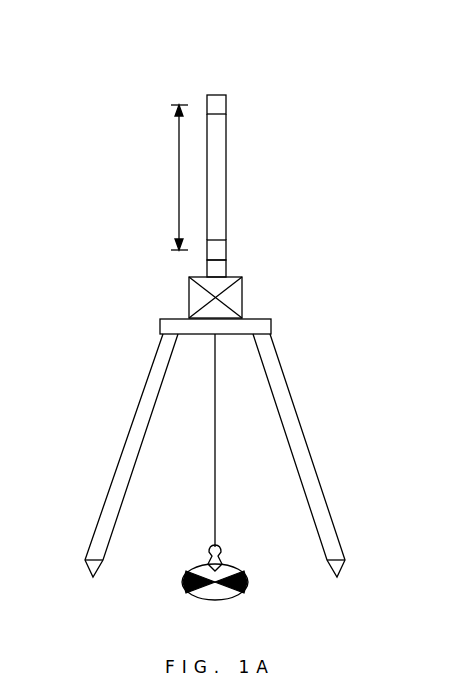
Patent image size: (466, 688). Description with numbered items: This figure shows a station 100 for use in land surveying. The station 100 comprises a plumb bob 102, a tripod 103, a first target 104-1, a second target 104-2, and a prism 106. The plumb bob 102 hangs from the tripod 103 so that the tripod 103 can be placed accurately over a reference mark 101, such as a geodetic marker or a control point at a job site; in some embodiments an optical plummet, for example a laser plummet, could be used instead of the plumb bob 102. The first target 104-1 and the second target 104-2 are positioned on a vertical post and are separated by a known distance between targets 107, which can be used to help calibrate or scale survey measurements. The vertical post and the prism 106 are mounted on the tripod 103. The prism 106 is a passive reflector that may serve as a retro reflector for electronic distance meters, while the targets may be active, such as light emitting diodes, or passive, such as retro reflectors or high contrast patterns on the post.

The station 100 is at (337, 63).
The reference mark 101 is at (186, 585).
The plumb bob 102 is at (204, 557).
The tripod 103 is at (101, 512).
The first target 104-1 is at (227, 250).
The second target 104-2 is at (227, 112).
The prism 106 is at (243, 301).
The known distance between targets 107 is at (178, 179).